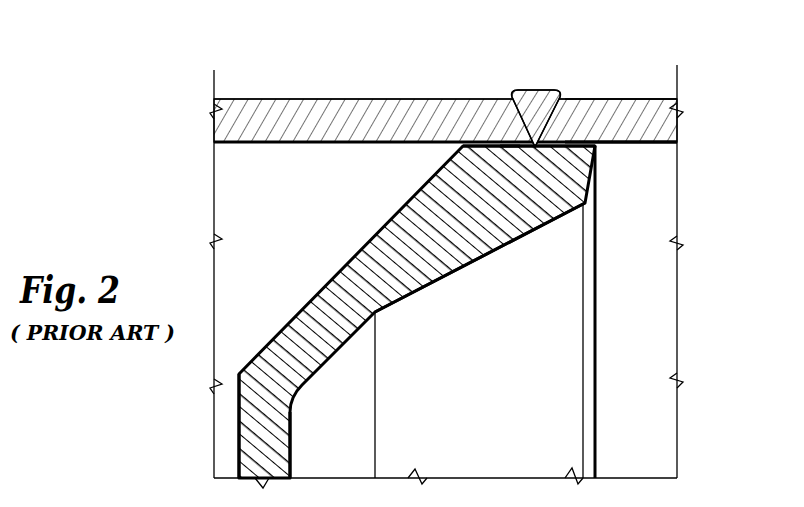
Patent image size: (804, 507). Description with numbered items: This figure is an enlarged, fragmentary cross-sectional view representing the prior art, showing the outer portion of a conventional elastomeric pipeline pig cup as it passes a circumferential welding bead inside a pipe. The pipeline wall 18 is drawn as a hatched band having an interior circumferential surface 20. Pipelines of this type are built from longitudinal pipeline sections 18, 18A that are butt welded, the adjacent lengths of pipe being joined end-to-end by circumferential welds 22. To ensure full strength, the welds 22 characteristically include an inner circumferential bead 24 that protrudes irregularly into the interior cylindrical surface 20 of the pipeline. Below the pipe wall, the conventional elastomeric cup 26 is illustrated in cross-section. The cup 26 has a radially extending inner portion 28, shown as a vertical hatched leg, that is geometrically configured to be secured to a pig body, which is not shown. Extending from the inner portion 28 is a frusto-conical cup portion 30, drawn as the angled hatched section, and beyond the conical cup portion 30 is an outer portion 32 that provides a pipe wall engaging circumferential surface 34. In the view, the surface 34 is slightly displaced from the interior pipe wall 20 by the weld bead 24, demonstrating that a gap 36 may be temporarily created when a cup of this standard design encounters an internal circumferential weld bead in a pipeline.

The pipeline wall 18 is at (394, 108).
The pipeline section 18A is at (638, 110).
The interior circumferential surface 20 is at (300, 146).
The circumferential weld 22 is at (537, 98).
The inner circumferential bead 24 is at (529, 147).
The elastomeric cup 26 is at (450, 376).
The inner portion 28 is at (277, 447).
The frusto-conical cup portion 30 is at (345, 286).
The outer portion 32 is at (500, 180).
The pipe wall engaging circumferential surface 34 is at (578, 142).
The gap 36 is at (476, 146).